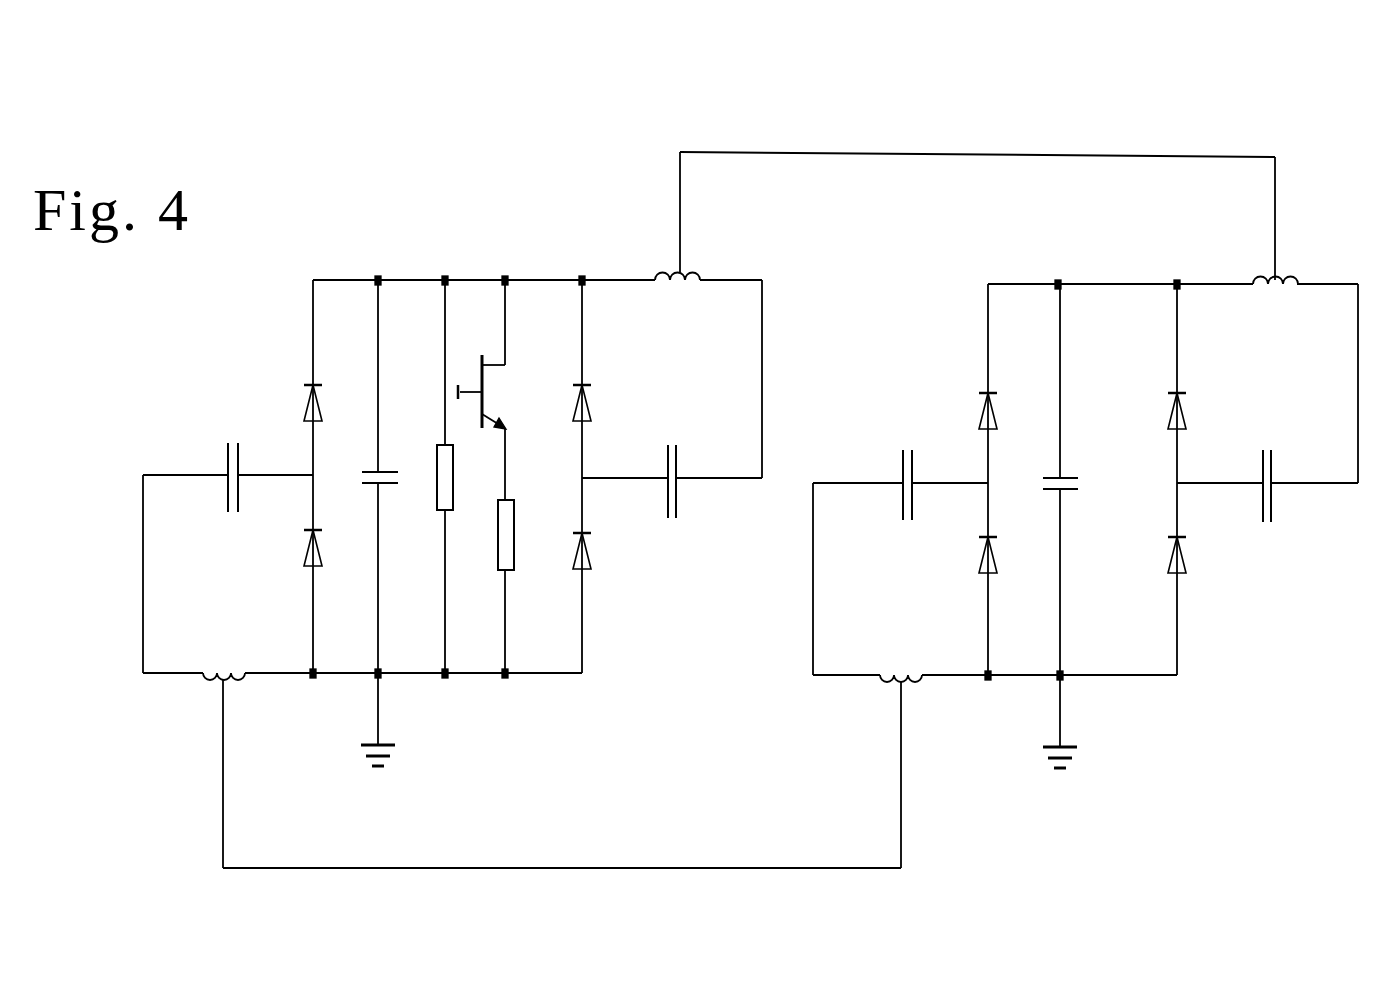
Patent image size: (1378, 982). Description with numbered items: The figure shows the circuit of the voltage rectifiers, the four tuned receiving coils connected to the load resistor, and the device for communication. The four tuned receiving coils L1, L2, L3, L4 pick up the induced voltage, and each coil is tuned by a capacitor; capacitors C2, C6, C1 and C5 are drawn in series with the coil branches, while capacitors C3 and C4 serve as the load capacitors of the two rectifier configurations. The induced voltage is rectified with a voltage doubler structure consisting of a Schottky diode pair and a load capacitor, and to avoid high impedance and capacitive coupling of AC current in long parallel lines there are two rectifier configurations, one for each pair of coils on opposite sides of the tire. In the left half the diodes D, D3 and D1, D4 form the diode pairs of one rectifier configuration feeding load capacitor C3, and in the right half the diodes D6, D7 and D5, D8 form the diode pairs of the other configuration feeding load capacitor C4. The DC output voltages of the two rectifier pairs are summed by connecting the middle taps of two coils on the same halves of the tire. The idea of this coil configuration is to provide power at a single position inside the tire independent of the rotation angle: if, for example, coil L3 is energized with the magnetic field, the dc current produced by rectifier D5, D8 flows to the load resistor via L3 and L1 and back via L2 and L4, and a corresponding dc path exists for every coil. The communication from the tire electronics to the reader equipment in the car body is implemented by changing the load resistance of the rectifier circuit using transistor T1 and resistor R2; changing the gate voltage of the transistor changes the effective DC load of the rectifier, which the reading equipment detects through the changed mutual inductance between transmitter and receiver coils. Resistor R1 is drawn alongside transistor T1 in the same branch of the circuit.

The capacitor C1 is at (672, 512).
The capacitor C2 is at (228, 444).
The capacitor C3 is at (375, 476).
The capacitor C4 is at (1081, 479).
The capacitor C5 is at (1267, 516).
The capacitor C6 is at (900, 451).
The diode D is at (326, 377).
The diode D1 is at (567, 379).
The diode D3 is at (334, 574).
The diode D4 is at (566, 575).
The Schottky diode D5 is at (1157, 383).
The diode D6 is at (1008, 383).
The diode D7 is at (1008, 579).
The Schottky diode D8 is at (1157, 579).
The receiving coil L1 is at (677, 310).
The receiving coil L2 is at (224, 739).
The receiving coil L3 is at (1275, 315).
The receiving coil L4 is at (901, 740).
The resistor R1 is at (431, 476).
The resistor R2 is at (492, 583).
The transistor T1 is at (482, 390).